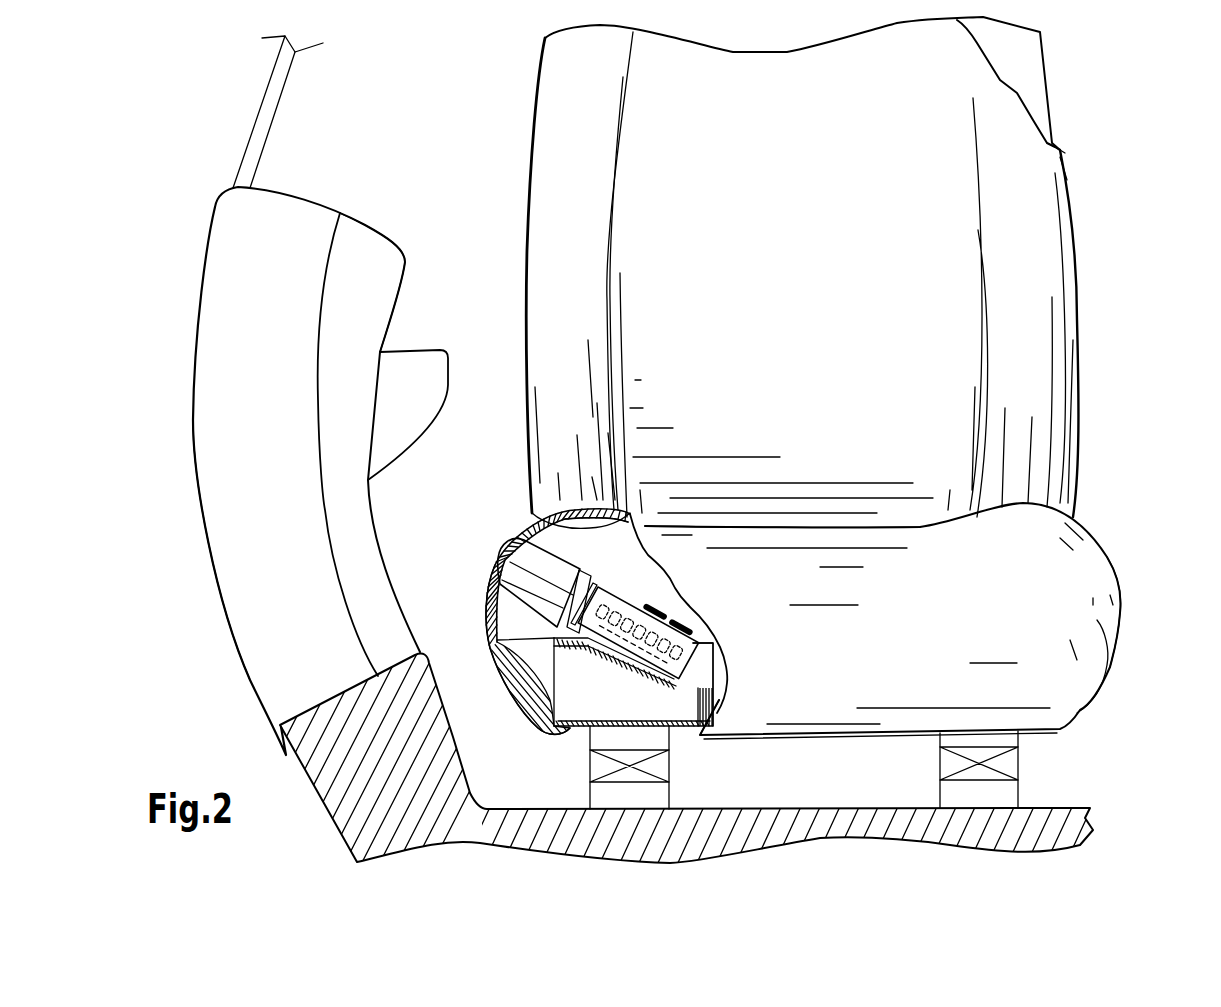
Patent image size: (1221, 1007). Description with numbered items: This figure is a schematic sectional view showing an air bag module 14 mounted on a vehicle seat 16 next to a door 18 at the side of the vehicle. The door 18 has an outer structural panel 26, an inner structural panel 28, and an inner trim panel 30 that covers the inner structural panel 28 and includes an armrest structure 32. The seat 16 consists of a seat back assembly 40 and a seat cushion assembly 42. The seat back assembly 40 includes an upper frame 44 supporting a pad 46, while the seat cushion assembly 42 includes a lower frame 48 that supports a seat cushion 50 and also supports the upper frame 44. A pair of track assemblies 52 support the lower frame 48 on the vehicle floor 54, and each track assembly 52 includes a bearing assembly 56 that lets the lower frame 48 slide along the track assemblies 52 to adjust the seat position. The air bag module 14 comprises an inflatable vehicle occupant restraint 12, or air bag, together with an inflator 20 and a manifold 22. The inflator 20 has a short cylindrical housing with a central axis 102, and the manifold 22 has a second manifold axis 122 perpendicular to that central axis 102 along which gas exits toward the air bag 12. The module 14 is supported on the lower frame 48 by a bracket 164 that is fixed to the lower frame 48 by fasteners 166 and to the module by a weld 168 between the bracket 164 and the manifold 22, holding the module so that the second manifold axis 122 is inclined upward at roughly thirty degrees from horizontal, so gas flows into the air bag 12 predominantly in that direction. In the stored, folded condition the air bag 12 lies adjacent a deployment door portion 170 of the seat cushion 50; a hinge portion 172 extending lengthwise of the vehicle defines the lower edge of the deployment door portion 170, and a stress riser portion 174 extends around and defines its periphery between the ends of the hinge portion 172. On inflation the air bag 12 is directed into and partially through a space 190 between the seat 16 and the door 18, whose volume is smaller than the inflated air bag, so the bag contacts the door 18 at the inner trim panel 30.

The inflatable vehicle occupant restraint 12 is at (543, 510).
The air bag module 14 is at (656, 548).
The vehicle seat 16 is at (516, 108).
The door 18 is at (182, 282).
The inflator 20 is at (629, 582).
The manifold 22 is at (710, 684).
The outer structural panel 26 is at (196, 485).
The inner structural panel 28 is at (324, 509).
The inner trim panel 30 is at (387, 233).
The armrest structure 32 is at (418, 345).
The seat back assembly 40 is at (1089, 268).
The seat cushion assembly 42 is at (1128, 549).
The upper frame 44 is at (1028, 77).
The pad 46 is at (1033, 122).
The lower frame 48 is at (717, 675).
The seat cushion 50 is at (1100, 622).
The track assemblies 52 is at (691, 760).
The vehicle floor 54 is at (872, 807).
The bearing assembly 56 is at (673, 775).
The central axis 102 is at (652, 598).
The second manifold axis 122 is at (677, 625).
The bracket 164 is at (552, 703).
The fasteners 166 is at (507, 677).
The weld 168 is at (556, 640).
The deployment door portion 170 is at (523, 553).
The hinge portion 172 is at (488, 631).
The stress riser portion 174 is at (631, 514).
The space 190 is at (470, 462).